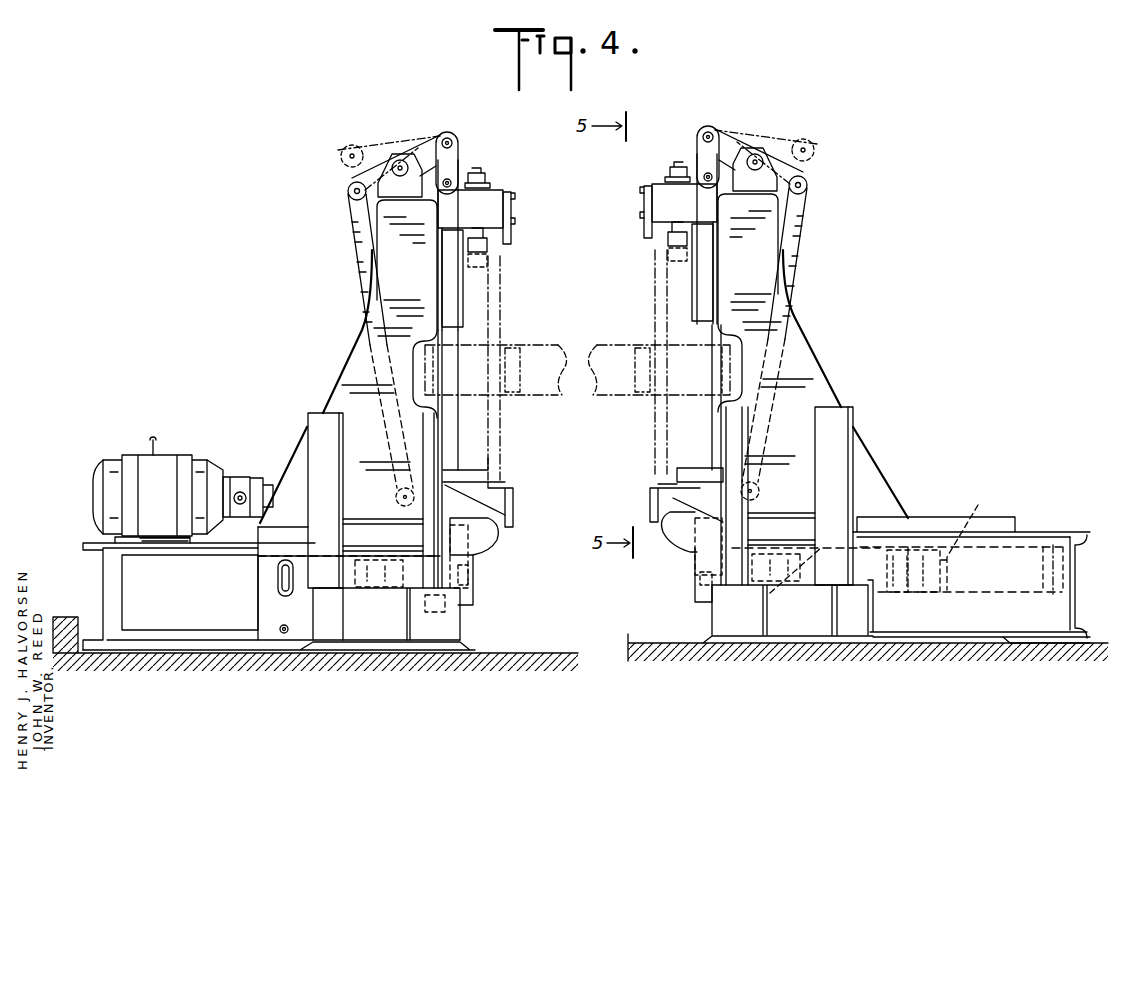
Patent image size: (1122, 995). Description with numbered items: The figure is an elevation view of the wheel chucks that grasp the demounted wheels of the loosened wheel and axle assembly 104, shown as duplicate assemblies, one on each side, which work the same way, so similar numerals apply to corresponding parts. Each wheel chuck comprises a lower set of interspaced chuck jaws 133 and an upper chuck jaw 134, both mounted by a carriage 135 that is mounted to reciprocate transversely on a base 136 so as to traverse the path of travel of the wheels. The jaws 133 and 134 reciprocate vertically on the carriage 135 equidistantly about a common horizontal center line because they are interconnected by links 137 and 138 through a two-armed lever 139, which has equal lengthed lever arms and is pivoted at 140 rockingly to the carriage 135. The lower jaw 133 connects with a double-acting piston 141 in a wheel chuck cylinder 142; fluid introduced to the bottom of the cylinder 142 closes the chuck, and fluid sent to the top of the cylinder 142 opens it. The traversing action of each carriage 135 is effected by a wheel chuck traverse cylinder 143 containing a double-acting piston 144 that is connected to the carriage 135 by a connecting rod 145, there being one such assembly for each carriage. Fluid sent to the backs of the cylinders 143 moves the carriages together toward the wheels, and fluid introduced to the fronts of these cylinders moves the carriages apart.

The wheel and axle assembly 104 is at (597, 343).
The lower chuck jaws 133 is at (513, 492).
The upper chuck jaw 134 is at (512, 214).
The carriage 135 is at (356, 359).
The base 136 is at (140, 580).
The link 137 is at (358, 258).
The link 138 is at (458, 170).
The two-armed lever 139 is at (428, 136).
The pivot 140 is at (400, 160).
The double-acting piston 141 is at (474, 589).
The wheel chuck cylinder 142 is at (474, 569).
The wheel chuck traverse cylinder 143 is at (980, 594).
The double-acting piston 144 is at (967, 541).
The connecting rod 145 is at (362, 594).